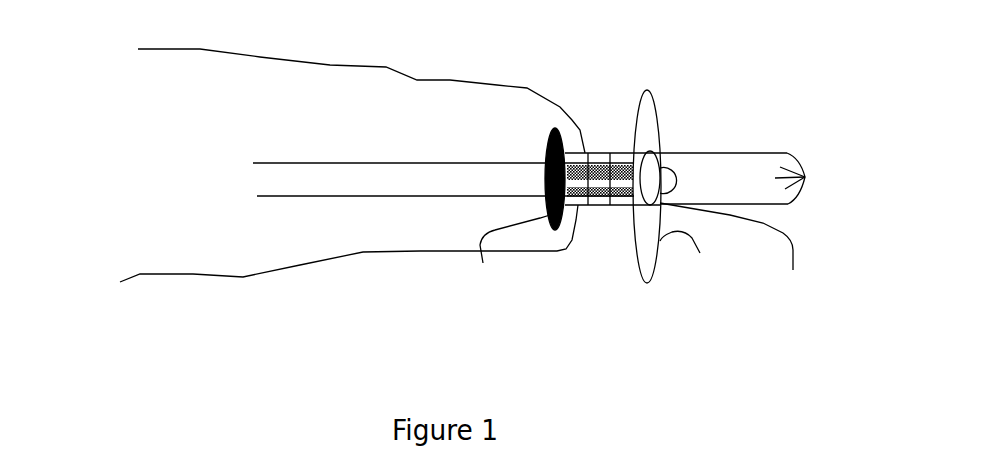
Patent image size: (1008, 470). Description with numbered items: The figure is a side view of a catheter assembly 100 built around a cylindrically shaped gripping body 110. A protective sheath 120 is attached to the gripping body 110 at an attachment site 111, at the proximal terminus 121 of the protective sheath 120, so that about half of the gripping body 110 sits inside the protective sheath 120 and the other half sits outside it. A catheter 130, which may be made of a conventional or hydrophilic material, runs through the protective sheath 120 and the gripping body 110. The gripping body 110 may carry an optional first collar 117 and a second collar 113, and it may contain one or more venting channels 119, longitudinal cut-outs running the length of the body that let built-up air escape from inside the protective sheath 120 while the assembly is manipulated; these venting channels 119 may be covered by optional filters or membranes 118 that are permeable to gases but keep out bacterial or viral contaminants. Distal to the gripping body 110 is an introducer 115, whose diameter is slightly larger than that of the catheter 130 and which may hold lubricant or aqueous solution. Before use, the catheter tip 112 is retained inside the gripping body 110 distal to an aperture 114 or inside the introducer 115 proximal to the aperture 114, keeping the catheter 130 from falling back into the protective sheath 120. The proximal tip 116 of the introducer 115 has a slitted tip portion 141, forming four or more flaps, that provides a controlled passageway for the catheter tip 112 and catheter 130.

The catheter assembly 100 is at (102, 140).
The gripping body 110 is at (618, 153).
The attachment site 111 is at (590, 153).
The catheter tip 112 is at (672, 161).
The second collar 113 is at (688, 257).
The aperture 114 is at (732, 248).
The introducer 115 is at (752, 153).
The proximal tip 116 is at (805, 175).
The first collar 117 is at (506, 252).
The filters or membranes 118 is at (578, 205).
The venting channels 119 is at (617, 210).
The protective sheath 120 is at (385, 67).
The proximal terminus 121 is at (585, 205).
The catheter 130 is at (297, 163).
The slitted tip portion 141 is at (802, 192).